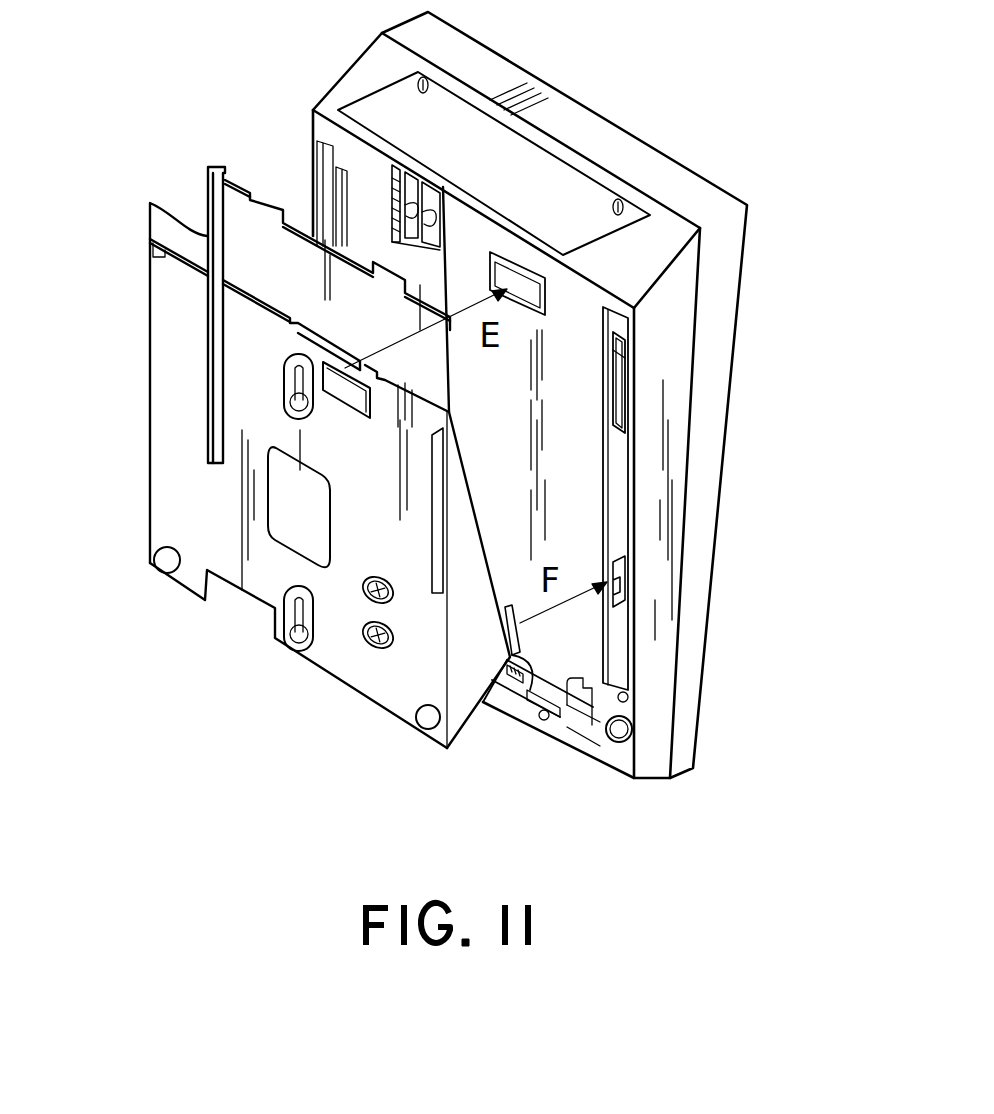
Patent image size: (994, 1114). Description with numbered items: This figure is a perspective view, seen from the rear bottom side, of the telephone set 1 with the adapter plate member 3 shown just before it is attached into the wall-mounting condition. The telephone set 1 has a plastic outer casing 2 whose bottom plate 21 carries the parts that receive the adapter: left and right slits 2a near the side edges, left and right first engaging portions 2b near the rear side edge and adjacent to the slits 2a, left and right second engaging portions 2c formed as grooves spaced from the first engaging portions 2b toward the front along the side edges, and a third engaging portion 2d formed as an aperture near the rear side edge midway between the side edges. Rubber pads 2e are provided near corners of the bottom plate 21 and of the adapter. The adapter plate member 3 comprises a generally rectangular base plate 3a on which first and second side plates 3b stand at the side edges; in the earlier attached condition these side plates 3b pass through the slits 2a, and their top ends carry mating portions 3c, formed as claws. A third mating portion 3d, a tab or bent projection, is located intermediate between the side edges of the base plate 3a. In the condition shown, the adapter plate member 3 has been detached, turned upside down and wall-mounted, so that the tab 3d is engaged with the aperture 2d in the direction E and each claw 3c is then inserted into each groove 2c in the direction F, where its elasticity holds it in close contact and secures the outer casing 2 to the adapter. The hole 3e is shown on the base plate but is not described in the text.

The telephone set 1 is at (740, 450).
The outer casing 2 is at (583, 98).
The slits 2a is at (317, 143).
The first engaging portions 2b is at (342, 198).
The second engaging portions 2c is at (616, 590).
The third engaging portion 2d is at (537, 277).
The rubber pads 2e is at (632, 740).
The bottom plate 21 is at (586, 526).
The adapter plate member 3 is at (145, 346).
The base plate 3a is at (175, 412).
The side plates 3b is at (468, 707).
The mating portions 3c is at (530, 692).
The third mating portion 3d is at (347, 388).
The mounting hole 3e is at (165, 562).